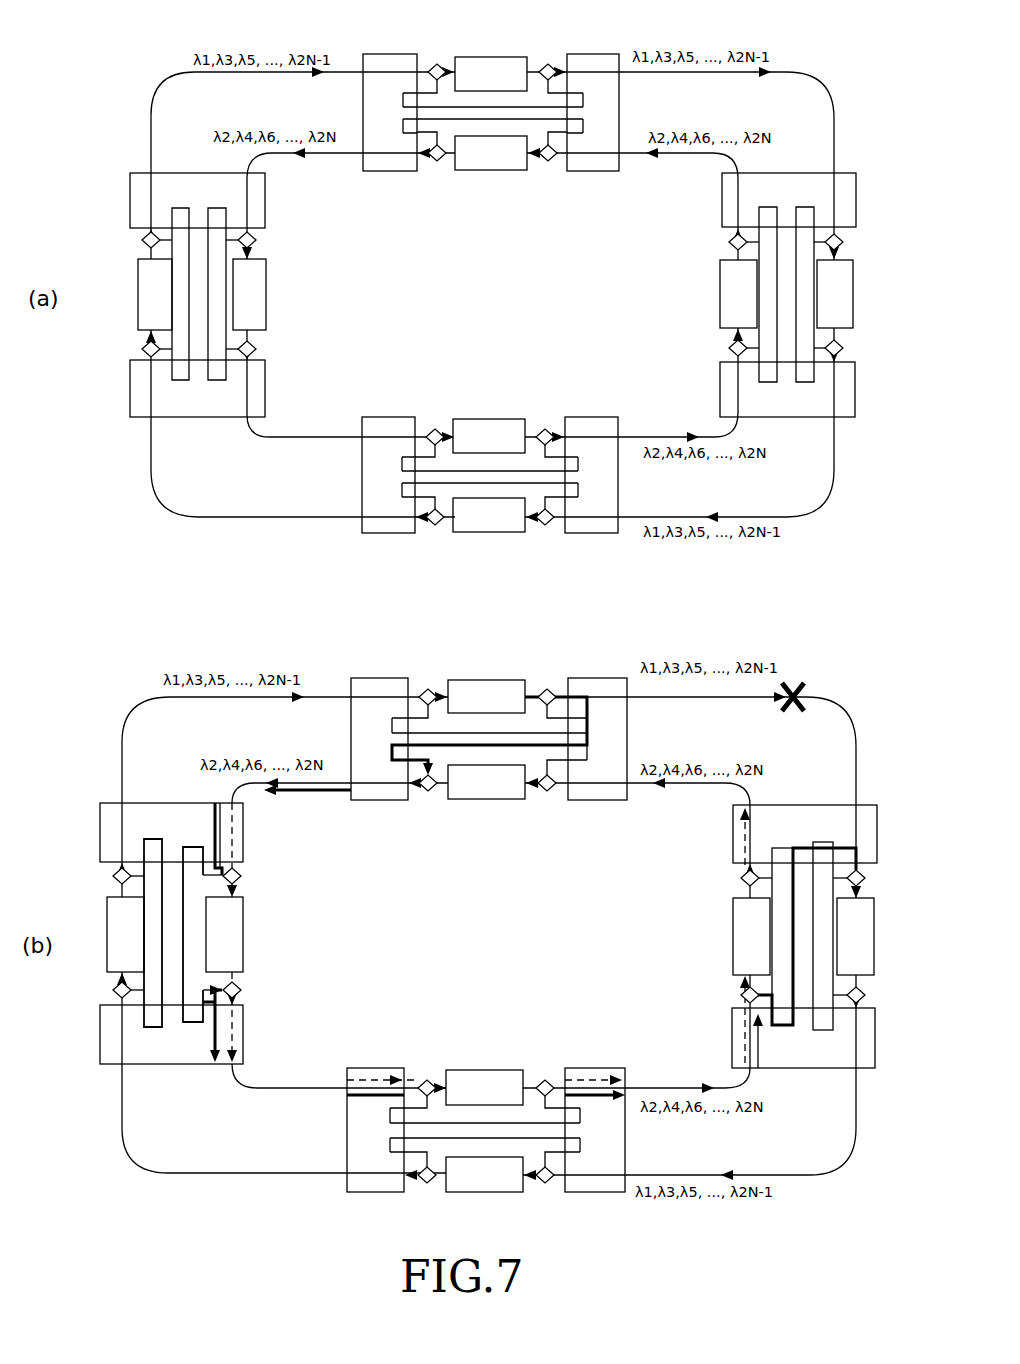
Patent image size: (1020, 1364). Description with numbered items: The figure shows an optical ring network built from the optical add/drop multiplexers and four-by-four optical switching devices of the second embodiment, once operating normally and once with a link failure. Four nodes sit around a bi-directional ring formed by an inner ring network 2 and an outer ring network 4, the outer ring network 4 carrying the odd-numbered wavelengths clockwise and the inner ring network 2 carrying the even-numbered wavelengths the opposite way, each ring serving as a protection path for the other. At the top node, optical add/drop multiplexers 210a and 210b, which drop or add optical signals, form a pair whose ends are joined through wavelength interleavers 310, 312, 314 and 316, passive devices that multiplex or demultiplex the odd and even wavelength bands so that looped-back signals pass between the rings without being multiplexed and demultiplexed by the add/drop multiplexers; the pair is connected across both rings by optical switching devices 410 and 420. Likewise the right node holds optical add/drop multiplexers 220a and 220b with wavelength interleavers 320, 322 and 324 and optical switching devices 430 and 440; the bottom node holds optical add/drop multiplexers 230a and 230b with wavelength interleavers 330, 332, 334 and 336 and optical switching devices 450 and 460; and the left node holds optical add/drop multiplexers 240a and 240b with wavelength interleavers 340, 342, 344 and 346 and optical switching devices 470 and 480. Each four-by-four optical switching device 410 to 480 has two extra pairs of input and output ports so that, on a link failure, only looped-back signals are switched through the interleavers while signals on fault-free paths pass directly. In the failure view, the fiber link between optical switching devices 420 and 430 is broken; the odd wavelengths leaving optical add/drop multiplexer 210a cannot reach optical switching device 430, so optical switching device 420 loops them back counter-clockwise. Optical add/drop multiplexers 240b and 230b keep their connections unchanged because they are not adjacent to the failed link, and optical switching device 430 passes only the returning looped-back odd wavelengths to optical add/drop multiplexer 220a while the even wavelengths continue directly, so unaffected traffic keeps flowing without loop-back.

The inner ring network 2 is at (318, 432).
The outer ring network 4 is at (258, 516).
The wavelength interleaver 310 is at (489, 394).
The optical add/drop multiplexer 210a is at (488, 56).
The optical add/drop multiplexer 210b is at (482, 170).
The optical add/drop multiplexer 220a is at (853, 296).
The optical add/drop multiplexer 220b is at (720, 295).
The optical add/drop multiplexer 230a is at (480, 532).
The optical add/drop multiplexer 230b is at (476, 419).
The optical add/drop multiplexer 240a is at (138, 295).
The optical add/drop multiplexer 240b is at (266, 293).
The wavelength interleaver 312 is at (548, 64).
The wavelength interleaver 314 is at (437, 161).
The wavelength interleaver 316 is at (548, 161).
The optical switch 320 is at (843, 242).
The optical switch 322 is at (843, 348).
The optical switch 324 is at (730, 242).
The optical switch 330 is at (545, 525).
The optical switch 332 is at (435, 525).
The optical switch 334 is at (545, 428).
The optical switch 336 is at (436, 428).
The optical switch 340 is at (142, 349).
The optical switch 342 is at (142, 240).
The optical switch 344 is at (256, 349).
The optical switch 346 is at (256, 240).
The 4×4 optical switching device 410 is at (378, 171).
The 4×4 optical switching device 420 is at (583, 171).
The 4×4 optical switching device 430 is at (722, 205).
The 4×4 optical switching device 440 is at (729, 348).
The 4×4 optical switching device 450 is at (588, 533).
The 4×4 optical switching device 460 is at (384, 533).
The 4×4 optical switching device 470 is at (265, 378).
The 4×4 optical switching device 480 is at (265, 205).